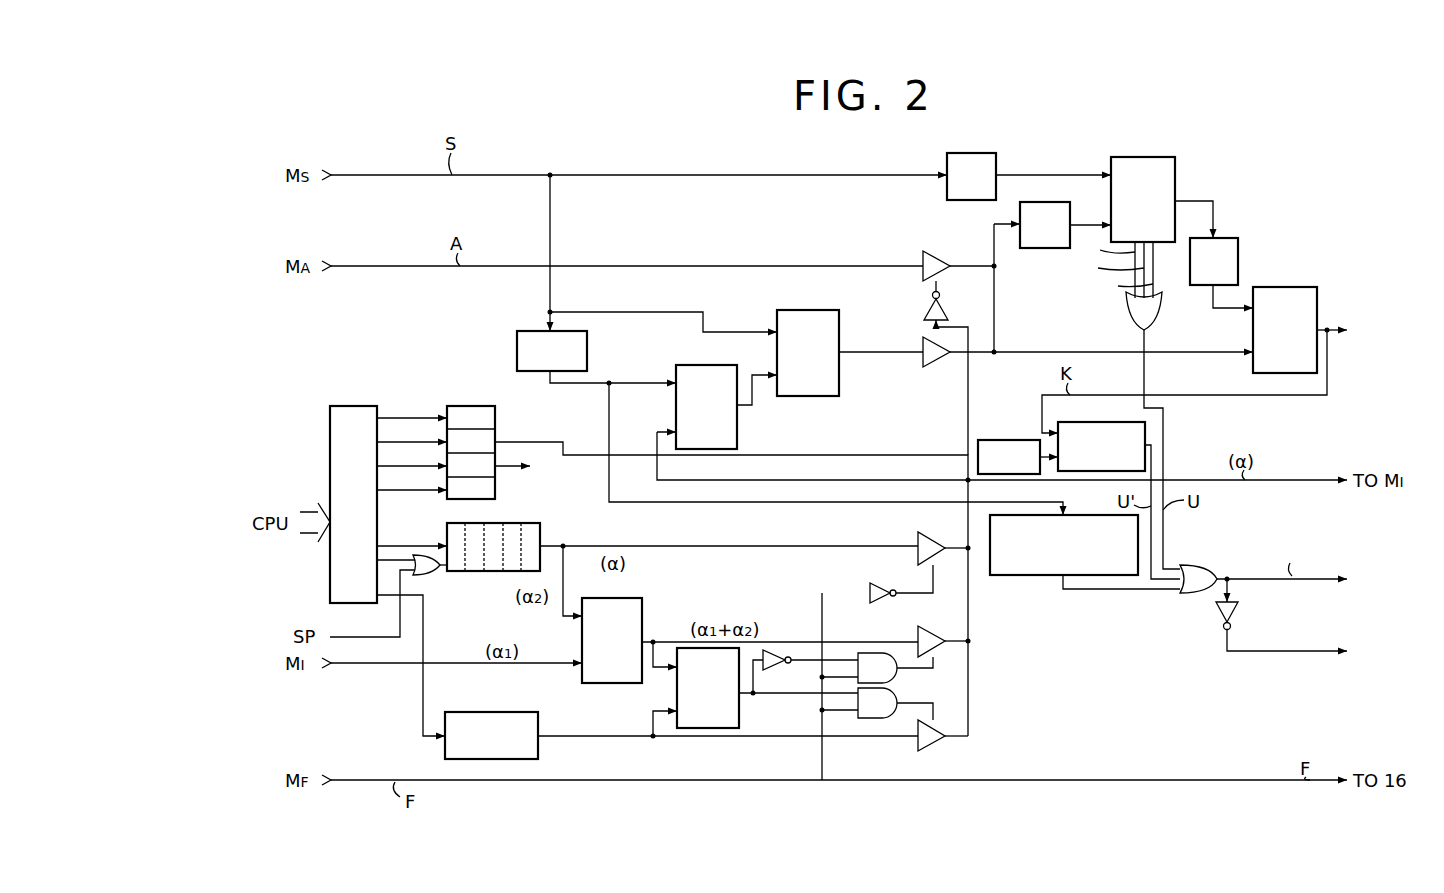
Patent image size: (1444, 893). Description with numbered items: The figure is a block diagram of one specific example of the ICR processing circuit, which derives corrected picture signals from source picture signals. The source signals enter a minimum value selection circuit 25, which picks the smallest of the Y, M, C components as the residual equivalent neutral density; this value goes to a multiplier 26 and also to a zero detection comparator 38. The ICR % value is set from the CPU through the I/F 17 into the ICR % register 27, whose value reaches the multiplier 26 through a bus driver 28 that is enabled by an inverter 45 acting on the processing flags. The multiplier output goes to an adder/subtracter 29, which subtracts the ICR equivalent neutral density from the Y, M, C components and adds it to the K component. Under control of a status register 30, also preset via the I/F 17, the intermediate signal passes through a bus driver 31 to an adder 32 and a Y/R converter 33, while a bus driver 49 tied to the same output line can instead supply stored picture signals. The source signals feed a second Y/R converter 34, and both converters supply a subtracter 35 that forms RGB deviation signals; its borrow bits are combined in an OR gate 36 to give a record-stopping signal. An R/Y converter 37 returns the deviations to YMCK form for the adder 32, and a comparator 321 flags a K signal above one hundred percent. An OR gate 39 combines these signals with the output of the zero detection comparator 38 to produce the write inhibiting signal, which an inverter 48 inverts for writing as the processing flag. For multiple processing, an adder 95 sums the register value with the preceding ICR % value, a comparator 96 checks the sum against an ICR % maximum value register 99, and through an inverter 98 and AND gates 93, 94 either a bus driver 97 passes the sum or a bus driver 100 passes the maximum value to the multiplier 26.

The I/F 17 is at (372, 406).
The minimum value selection circuit 25 is at (587, 360).
The multiplier 26 is at (705, 365).
The ICR % register 27 is at (542, 530).
The bus driver 28 is at (918, 543).
The adder/subtracter 29 is at (815, 310).
The status register 30 is at (475, 406).
The bus driver 31 is at (928, 372).
The adder 32 is at (1280, 287).
The Y/R converter 33 is at (1044, 248).
The Y/R converter 34 is at (996, 153).
The subtracter 35 is at (1175, 157).
The OR gate 36 is at (1158, 320).
The R/Y converter 37 is at (1238, 268).
The zero detection comparator 38 is at (1028, 575).
The OR gate 39 is at (1195, 565).
The inverter 45 is at (868, 590).
The inverter 48 is at (1238, 614).
The bus driver 49 is at (940, 255).
The AND gate 93 is at (880, 718).
The AND gate 94 is at (897, 675).
The adder 95 is at (642, 610).
The comparator 96 is at (739, 715).
The bus driver 97 is at (945, 618).
The inverter 98 is at (780, 666).
The ICR % maximum value register 99 is at (538, 730).
The bus driver 100 is at (938, 742).
The comparator 321 is at (1075, 422).